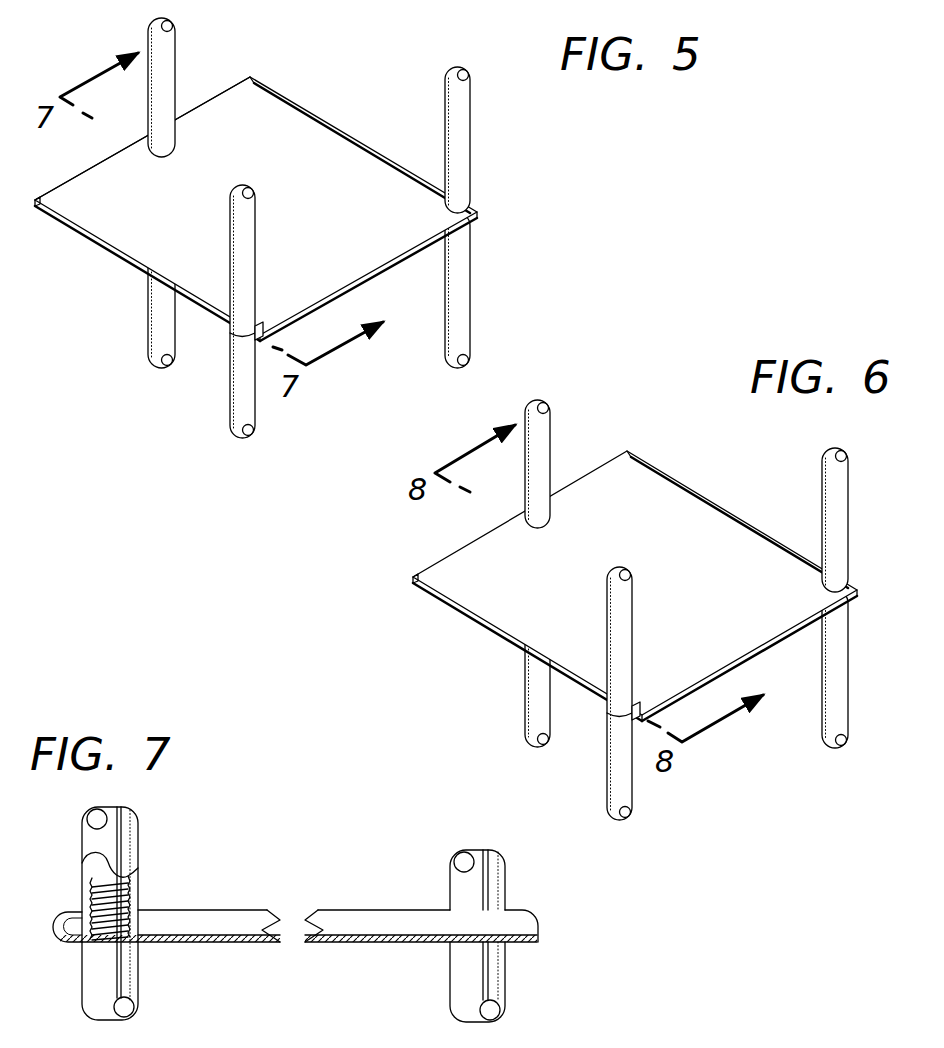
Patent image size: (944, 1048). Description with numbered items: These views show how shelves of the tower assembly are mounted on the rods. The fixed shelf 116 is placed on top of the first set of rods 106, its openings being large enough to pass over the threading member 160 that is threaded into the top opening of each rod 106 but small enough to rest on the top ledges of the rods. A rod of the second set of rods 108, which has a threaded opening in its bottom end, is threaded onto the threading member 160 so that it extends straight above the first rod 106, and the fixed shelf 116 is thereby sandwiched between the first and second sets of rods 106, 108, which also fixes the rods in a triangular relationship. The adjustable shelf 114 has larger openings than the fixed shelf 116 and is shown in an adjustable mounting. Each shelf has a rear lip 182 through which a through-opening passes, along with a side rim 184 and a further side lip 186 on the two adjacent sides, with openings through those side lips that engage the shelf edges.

In FIG. 5, the first set of rods 106 is at (465, 318).
In FIG. 6, the first set of rods 106 is at (827, 725).
In FIG. 7, the first set of rods 106 is at (493, 977).
In FIG. 5, the second set of rods 108 is at (465, 163).
In FIG. 7, the second set of rods 108 is at (503, 882).
In FIG. 6, the adjustable shelf 114 is at (690, 513).
In FIG. 5, the fixed shelf 116 is at (348, 158).
In FIG. 7, the fixed shelf 116 is at (218, 942).
In FIG. 7, the threading member 160 is at (130, 900).
In FIG. 5, the rear lip 182 is at (223, 100).
In FIG. 5, the side rim 184 is at (123, 258).
In FIG. 5, the side shelf edge 186 is at (312, 110).